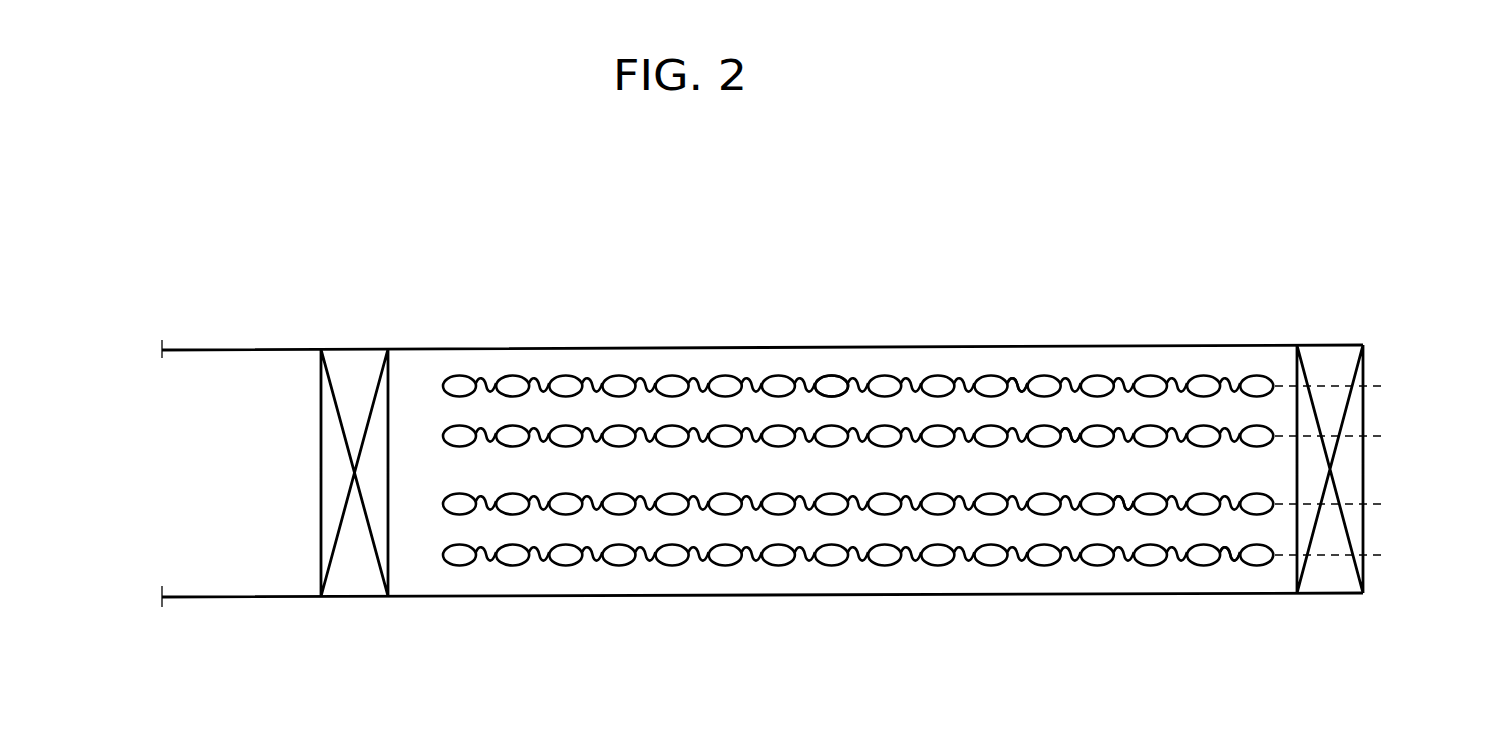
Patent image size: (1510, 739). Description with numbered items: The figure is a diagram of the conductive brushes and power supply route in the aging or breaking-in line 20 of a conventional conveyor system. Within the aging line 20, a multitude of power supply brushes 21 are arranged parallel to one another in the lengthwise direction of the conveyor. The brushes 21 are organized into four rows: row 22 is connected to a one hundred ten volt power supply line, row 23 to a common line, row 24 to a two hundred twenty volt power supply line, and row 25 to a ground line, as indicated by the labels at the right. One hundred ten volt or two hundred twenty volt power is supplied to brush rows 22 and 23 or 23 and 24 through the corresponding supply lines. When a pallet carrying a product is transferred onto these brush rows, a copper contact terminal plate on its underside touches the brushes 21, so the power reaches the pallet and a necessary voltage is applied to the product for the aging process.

The aging (breaking-in) line 20 is at (653, 337).
The power supply brushes 21 is at (835, 387).
The brush row 22 is at (1013, 378).
The brush row 23 is at (1063, 430).
The brush row 24 is at (1132, 505).
The brush row 25 is at (1233, 560).